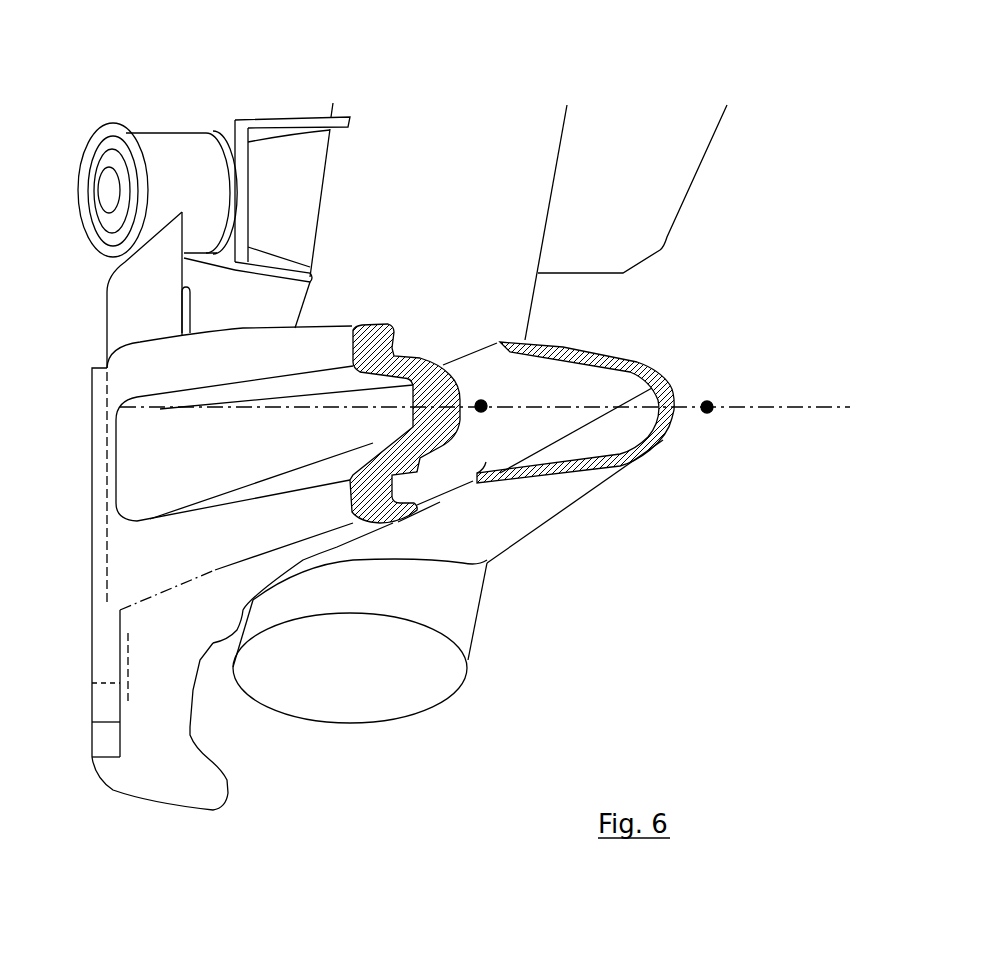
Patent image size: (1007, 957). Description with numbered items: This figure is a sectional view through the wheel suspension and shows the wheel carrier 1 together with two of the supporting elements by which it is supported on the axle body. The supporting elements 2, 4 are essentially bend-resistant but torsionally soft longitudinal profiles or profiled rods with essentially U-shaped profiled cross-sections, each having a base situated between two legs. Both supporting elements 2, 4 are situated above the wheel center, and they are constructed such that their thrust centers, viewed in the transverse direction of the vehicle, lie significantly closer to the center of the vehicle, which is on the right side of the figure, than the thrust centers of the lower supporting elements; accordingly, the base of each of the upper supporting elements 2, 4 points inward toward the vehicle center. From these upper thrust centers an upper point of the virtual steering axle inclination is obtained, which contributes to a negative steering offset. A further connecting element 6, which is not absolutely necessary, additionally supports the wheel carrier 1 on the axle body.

The wheel carrier 1 is at (98, 705).
The supporting element 2 is at (463, 537).
The supporting element 4 is at (303, 358).
The connecting element 6 is at (157, 160).